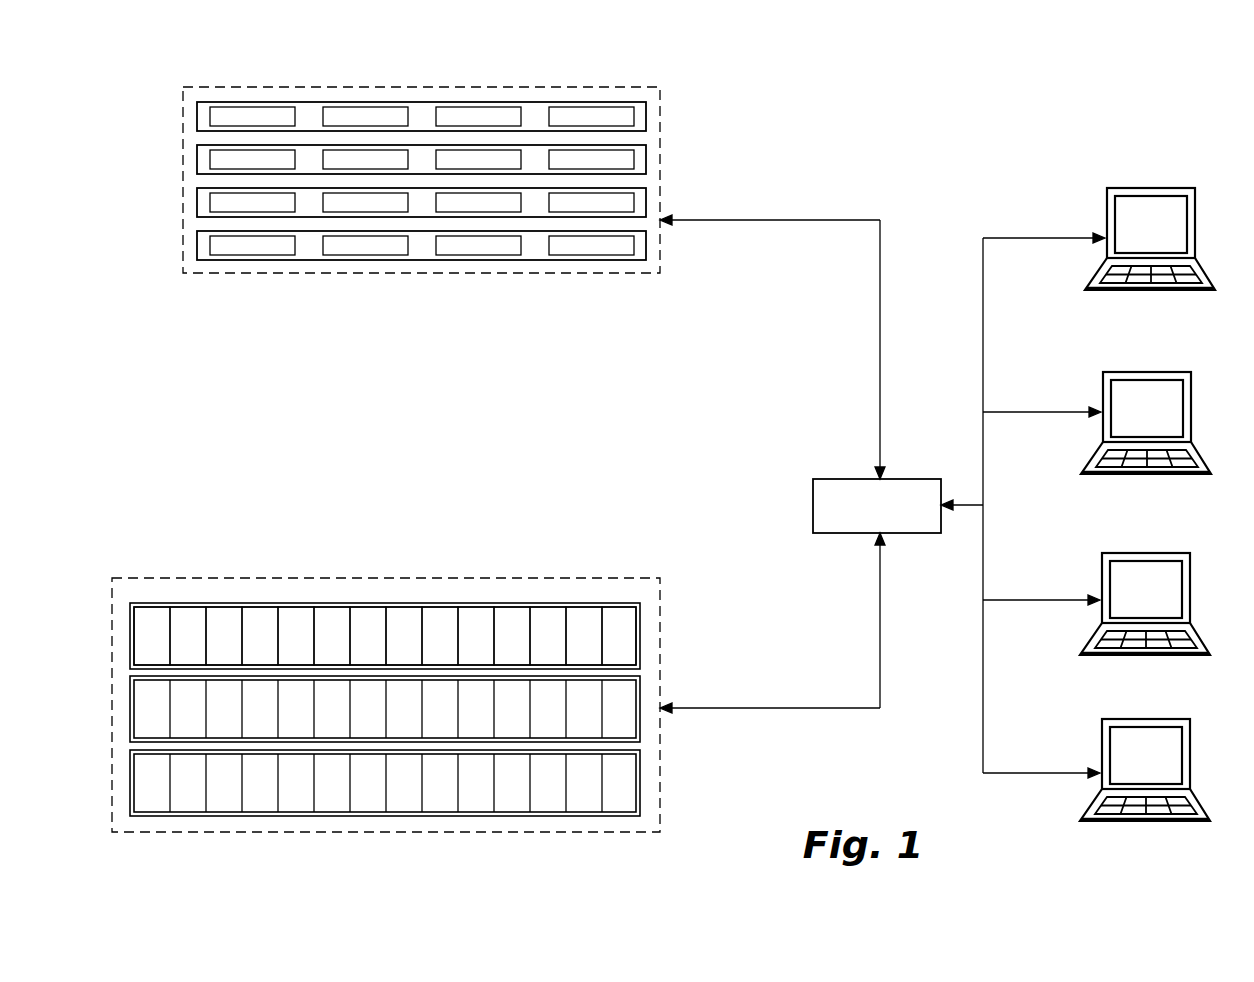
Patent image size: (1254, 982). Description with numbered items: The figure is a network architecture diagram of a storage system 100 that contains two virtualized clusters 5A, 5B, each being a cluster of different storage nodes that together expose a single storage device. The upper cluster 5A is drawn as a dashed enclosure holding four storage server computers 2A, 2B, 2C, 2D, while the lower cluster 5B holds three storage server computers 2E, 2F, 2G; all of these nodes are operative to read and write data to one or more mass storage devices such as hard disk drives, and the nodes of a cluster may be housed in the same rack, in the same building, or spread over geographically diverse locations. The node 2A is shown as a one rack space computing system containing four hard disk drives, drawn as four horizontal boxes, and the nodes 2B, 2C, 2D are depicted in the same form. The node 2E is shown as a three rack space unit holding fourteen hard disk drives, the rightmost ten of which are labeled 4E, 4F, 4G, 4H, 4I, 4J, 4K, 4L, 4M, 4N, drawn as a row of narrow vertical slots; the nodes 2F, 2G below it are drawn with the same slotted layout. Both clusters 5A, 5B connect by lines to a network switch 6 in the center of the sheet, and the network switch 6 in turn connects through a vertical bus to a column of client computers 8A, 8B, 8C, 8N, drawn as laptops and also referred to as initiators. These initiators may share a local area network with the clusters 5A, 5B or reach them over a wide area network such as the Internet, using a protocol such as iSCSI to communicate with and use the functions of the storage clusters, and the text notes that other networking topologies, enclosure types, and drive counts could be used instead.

The storage system 100 is at (952, 162).
The virtualized cluster 5A is at (458, 191).
The virtualized cluster 5B is at (420, 698).
The storage server computer 2A is at (454, 136).
The storage server computer 2B is at (640, 170).
The storage server computer 2C is at (645, 214).
The storage server computer 2D is at (641, 257).
The storage server computer 2E is at (419, 650).
The storage server computer 2F is at (637, 717).
The storage server computer 2G is at (637, 790).
The hard disk drive 4E is at (296, 636).
The hard disk drive 4F is at (332, 636).
The hard disk drive 4G is at (368, 636).
The hard disk drive 4H is at (404, 636).
The hard disk drive 4I is at (440, 636).
The hard disk drive 4J is at (476, 636).
The hard disk drive 4K is at (512, 636).
The hard disk drive 4L is at (548, 636).
The hard disk drive 4M is at (584, 636).
The hard disk drive 4N is at (619, 636).
The network switch 6 is at (908, 533).
The client computer 8A is at (1188, 290).
The client computer 8B is at (1184, 474).
The client computer 8C is at (1183, 655).
The client computer 8N is at (1183, 821).